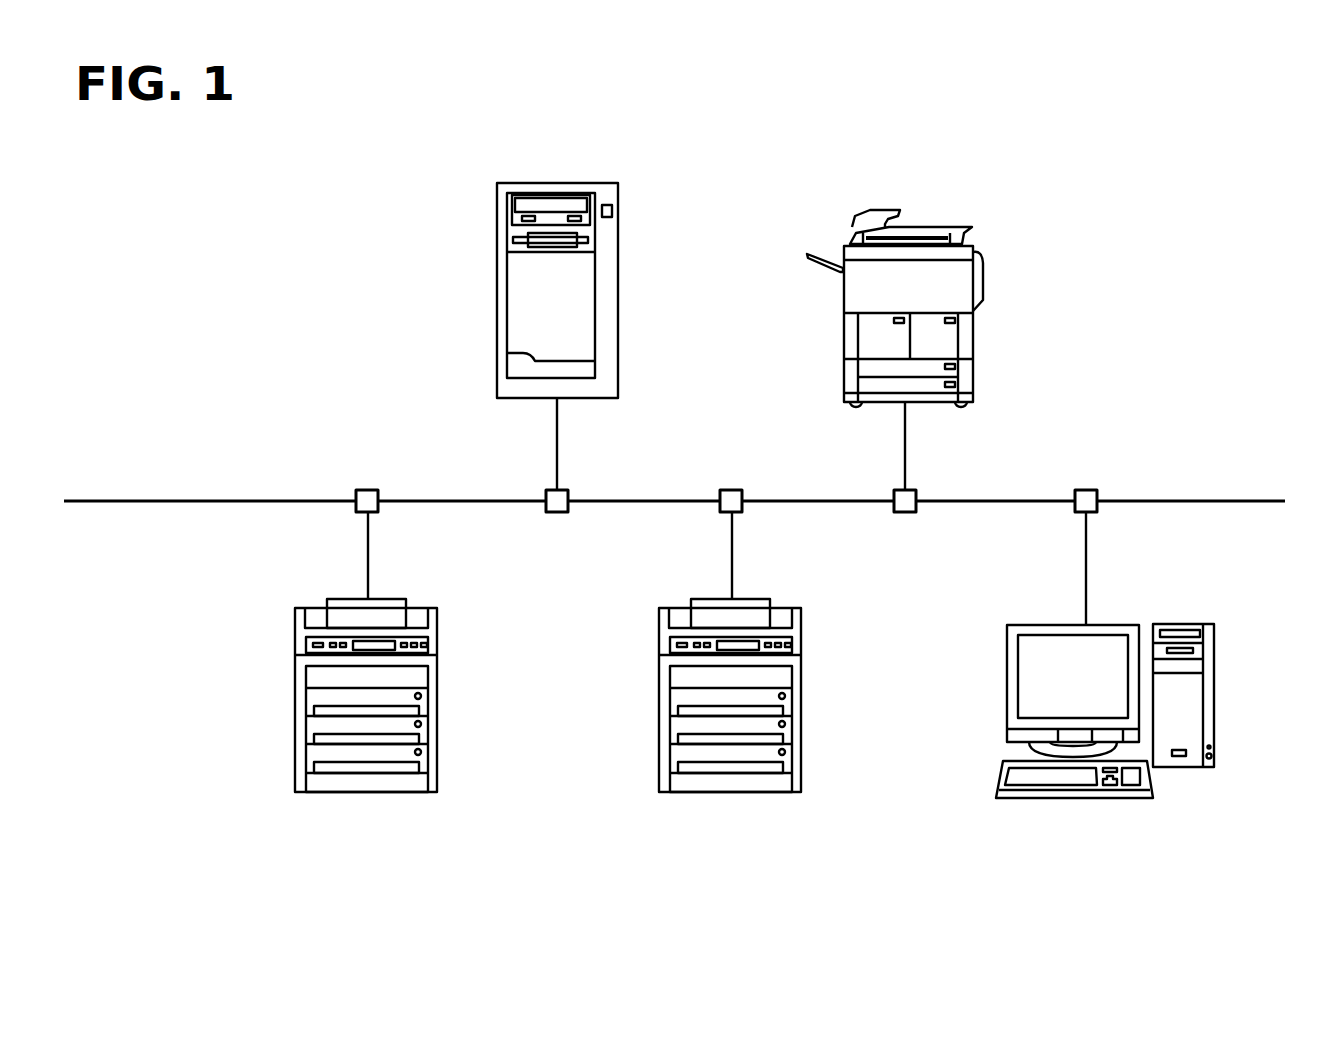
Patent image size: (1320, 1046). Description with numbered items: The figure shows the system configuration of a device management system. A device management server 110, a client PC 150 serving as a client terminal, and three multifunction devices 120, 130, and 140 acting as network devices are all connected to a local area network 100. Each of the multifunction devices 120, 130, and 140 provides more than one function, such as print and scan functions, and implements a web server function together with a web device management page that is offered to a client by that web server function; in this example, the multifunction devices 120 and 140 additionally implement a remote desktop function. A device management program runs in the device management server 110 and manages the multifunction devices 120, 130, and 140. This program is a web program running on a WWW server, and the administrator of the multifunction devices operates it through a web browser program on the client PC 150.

The local area network 100 is at (163, 500).
The device management server 110 is at (618, 230).
The multifunction device 120 is at (973, 252).
The multifunction device 130 is at (437, 634).
The multifunction device 140 is at (801, 634).
The client PC 150 is at (1030, 624).